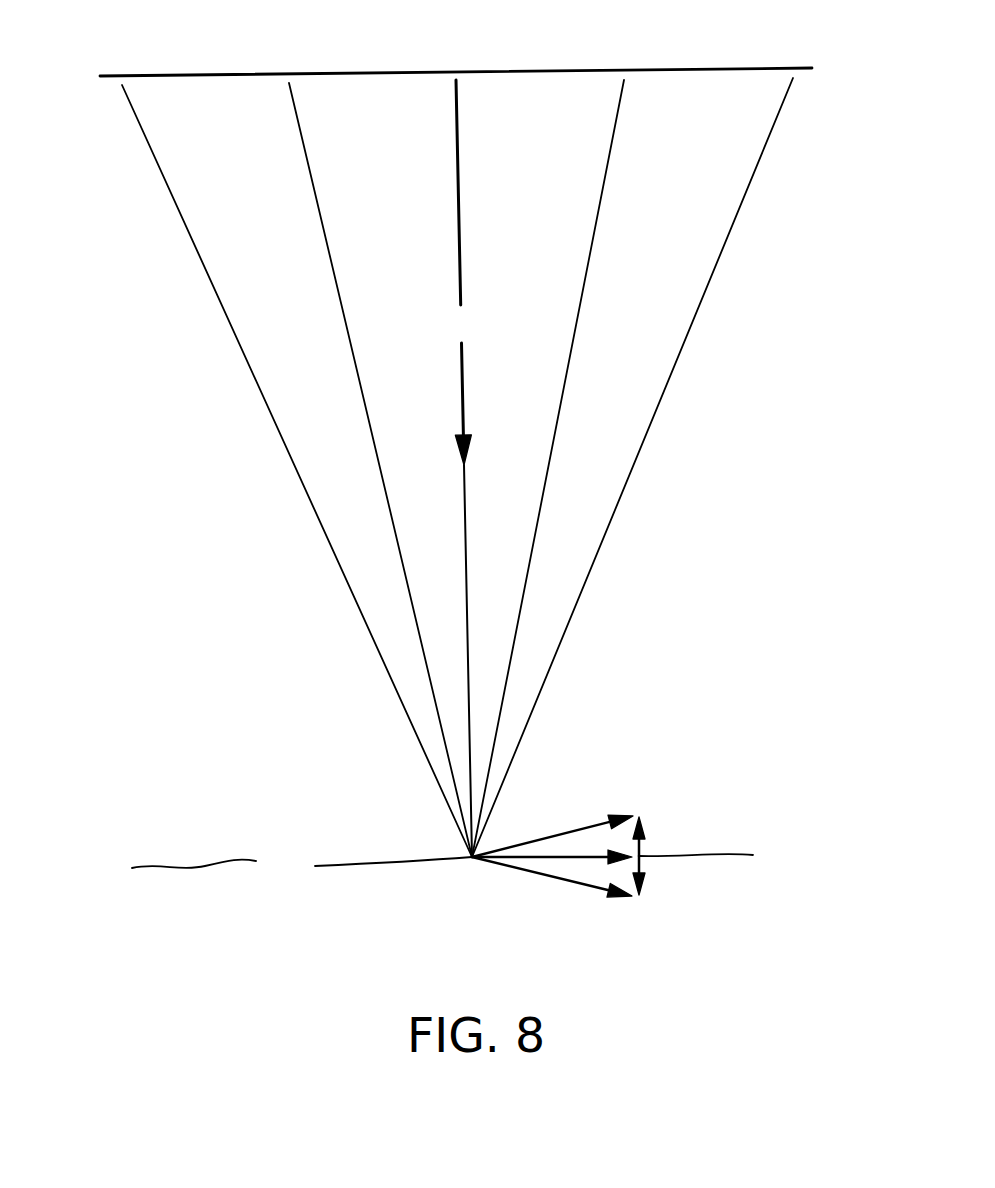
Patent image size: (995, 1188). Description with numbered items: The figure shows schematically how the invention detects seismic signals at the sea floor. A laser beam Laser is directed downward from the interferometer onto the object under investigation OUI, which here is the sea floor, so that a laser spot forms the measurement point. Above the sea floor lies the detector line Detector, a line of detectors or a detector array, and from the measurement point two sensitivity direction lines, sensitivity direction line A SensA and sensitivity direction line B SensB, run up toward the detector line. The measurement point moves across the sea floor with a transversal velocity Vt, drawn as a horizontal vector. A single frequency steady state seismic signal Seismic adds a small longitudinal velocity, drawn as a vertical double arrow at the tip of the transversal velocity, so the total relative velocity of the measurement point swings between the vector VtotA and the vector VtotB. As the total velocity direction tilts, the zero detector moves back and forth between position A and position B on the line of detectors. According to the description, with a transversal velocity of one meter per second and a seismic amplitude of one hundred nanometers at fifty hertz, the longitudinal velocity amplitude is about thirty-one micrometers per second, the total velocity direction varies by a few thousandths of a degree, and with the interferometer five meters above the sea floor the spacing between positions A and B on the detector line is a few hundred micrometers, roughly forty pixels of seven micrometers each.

The detector line Detector is at (456, 59).
The position A is at (290, 451).
The position B is at (636, 447).
The sensitivity direction line A SensA is at (373, 443).
The sensitivity direction line B SensB is at (553, 440).
The laser beam Laser is at (460, 468).
The object under investigation OUI is at (442, 864).
The total velocity vector VtotA is at (563, 830).
The transversal velocity Vt is at (533, 862).
The total velocity vector VtotB is at (595, 890).
The seismic signal Seismic is at (643, 848).